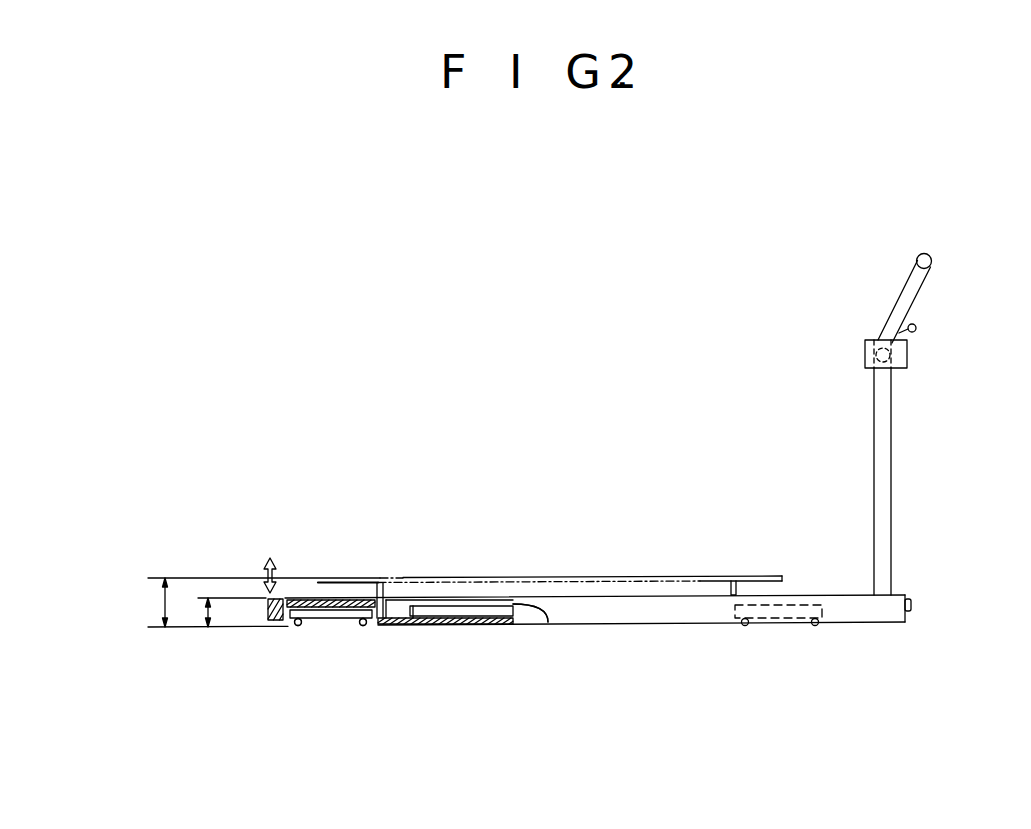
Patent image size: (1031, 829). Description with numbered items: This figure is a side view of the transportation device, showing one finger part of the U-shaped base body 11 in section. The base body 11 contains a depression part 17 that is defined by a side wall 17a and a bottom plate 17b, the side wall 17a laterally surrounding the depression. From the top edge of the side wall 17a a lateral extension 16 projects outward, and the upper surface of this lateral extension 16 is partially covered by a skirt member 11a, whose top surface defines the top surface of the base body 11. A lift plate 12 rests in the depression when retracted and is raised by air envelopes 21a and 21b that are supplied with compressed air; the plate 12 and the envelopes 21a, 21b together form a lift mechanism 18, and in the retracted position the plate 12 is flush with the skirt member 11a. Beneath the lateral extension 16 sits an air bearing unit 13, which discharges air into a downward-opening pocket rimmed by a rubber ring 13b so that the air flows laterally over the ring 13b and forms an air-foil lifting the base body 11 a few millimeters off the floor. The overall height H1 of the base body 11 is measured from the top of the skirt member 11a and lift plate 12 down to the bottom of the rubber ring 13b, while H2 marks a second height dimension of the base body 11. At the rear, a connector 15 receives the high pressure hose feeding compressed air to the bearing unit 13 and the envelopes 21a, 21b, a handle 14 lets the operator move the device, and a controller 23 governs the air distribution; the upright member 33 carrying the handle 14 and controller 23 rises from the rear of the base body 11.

The base body 11 is at (716, 606).
The skirt member 11a is at (266, 612).
The lift plate 12 is at (465, 577).
The air bearing unit 13 is at (338, 618).
The rubber ring 13b is at (296, 627).
The handle 14 is at (931, 257).
The connector 15 is at (913, 604).
The lateral extension 16 is at (338, 600).
The depression part 17 is at (395, 582).
The side wall 17a is at (366, 626).
The bottom plate 17b is at (441, 625).
The lift mechanism 18 is at (486, 630).
The air envelope 21a is at (540, 606).
The air envelope 21b is at (555, 598).
The controller 23 is at (908, 355).
The post 33 is at (834, 595).
The overall height H1 is at (201, 608).
The height H2 is at (163, 605).